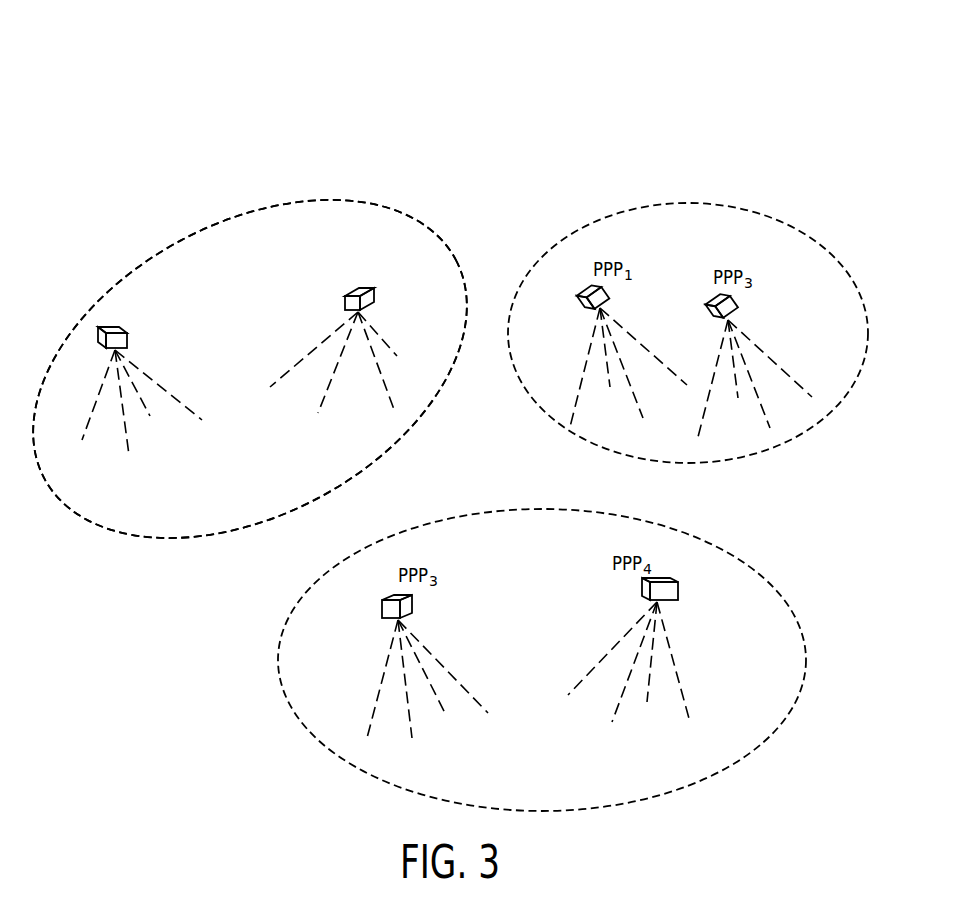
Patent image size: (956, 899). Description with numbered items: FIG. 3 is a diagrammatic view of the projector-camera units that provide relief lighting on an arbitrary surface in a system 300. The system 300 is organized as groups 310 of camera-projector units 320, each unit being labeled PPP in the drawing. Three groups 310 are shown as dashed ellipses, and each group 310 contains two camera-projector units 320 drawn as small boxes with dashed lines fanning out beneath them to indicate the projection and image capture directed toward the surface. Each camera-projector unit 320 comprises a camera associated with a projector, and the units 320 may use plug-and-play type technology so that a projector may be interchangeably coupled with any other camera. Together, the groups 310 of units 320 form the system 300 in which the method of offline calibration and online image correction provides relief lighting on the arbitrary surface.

The system 300 is at (87, 93).
The group 310 is at (181, 223).
The camera-projector unit 320 is at (103, 328).